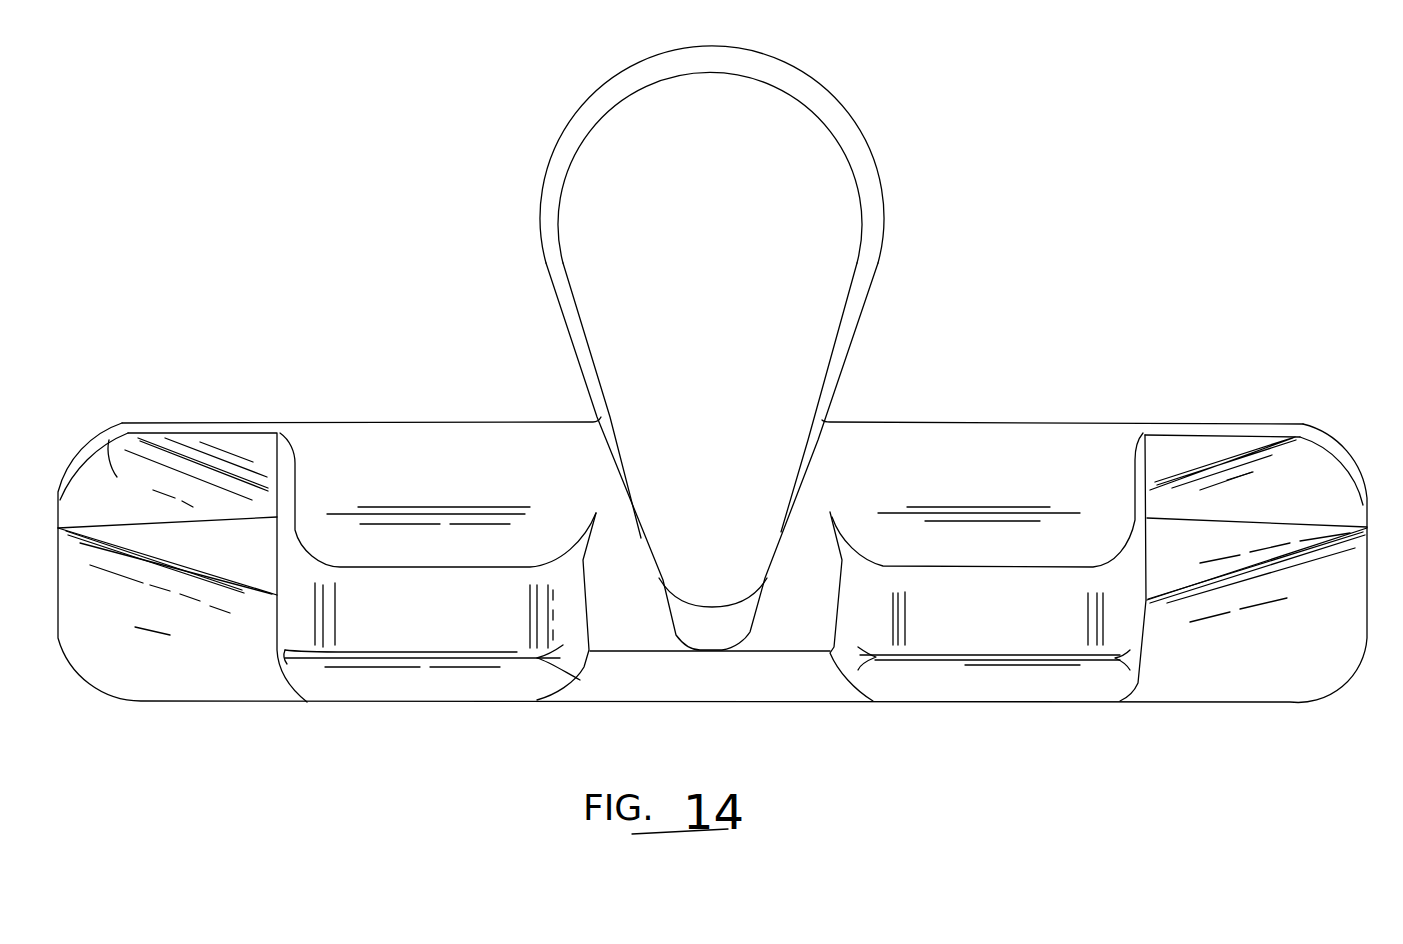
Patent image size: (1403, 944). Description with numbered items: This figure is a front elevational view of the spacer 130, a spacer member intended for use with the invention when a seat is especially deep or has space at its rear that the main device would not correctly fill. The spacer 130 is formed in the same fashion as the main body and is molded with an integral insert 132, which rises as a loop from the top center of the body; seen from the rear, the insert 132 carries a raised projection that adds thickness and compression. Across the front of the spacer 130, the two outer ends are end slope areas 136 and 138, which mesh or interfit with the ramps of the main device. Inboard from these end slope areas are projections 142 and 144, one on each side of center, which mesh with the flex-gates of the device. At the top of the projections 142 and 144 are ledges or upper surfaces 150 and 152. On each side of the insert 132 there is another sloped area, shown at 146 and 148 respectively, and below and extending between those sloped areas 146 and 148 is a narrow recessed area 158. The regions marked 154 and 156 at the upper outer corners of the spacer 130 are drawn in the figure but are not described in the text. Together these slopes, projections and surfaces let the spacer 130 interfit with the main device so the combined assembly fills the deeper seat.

The spacer 130 is at (973, 217).
The insert 132 is at (738, 297).
The end slope area 136 is at (207, 658).
The end slope area 138 is at (1273, 666).
The projection 142 is at (462, 619).
The projection 144 is at (1040, 620).
The sloped area 146 is at (622, 622).
The sloped area 148 is at (780, 610).
The ledge or upper surface 150 is at (438, 500).
The ledge or upper surface 152 is at (987, 500).
The top left panel 154 is at (110, 432).
The top right panel 156 is at (1310, 477).
The narrow recessed area 158 is at (820, 687).